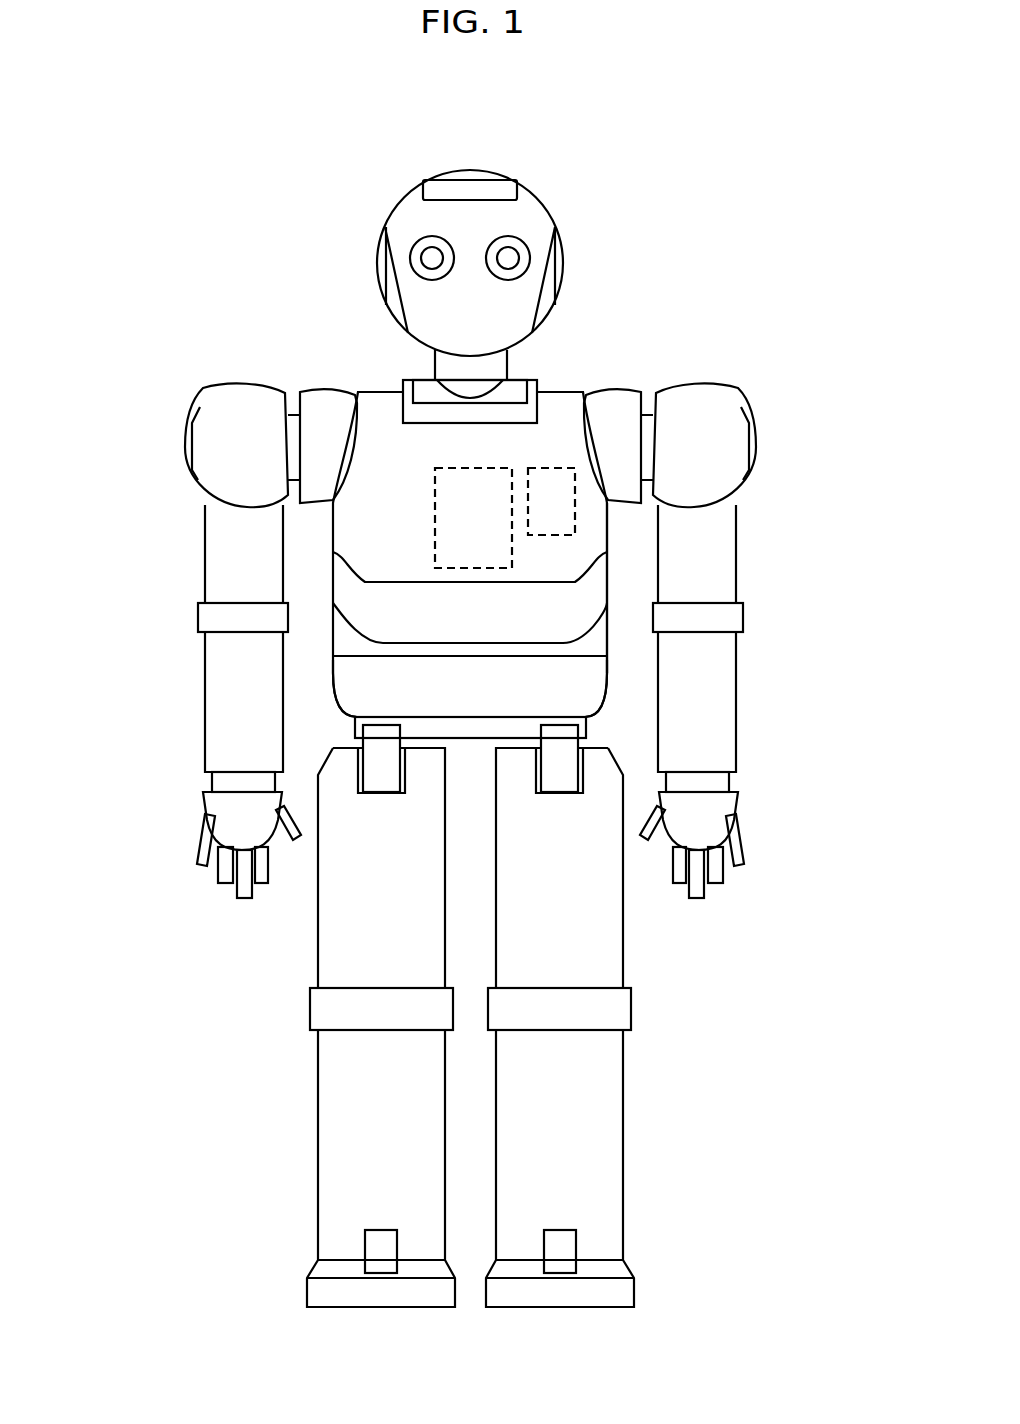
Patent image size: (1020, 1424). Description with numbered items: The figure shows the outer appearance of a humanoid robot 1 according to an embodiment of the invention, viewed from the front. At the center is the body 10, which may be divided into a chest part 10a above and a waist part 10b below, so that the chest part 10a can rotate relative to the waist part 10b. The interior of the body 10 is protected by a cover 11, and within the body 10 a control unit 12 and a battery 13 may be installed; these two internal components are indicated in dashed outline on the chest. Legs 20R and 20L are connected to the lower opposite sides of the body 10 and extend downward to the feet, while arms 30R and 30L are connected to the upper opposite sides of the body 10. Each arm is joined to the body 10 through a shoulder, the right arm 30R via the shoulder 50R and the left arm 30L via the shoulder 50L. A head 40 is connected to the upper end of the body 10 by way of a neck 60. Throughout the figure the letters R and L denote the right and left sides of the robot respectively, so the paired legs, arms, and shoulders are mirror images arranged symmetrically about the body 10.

The humanoid robot 1 is at (725, 190).
The body 10 is at (828, 582).
The chest part 10a is at (627, 581).
The waist part 10b is at (626, 672).
The cover 11 is at (607, 528).
The control unit 12 is at (435, 528).
The battery 13 is at (577, 502).
The right leg 20R is at (245, 982).
The left leg 20L is at (690, 983).
The right arm 30R is at (165, 607).
The left arm 30L is at (780, 702).
The head 40 is at (537, 185).
The right shoulder 50R is at (262, 352).
The left shoulder 50L is at (678, 351).
The neck 60 is at (545, 361).